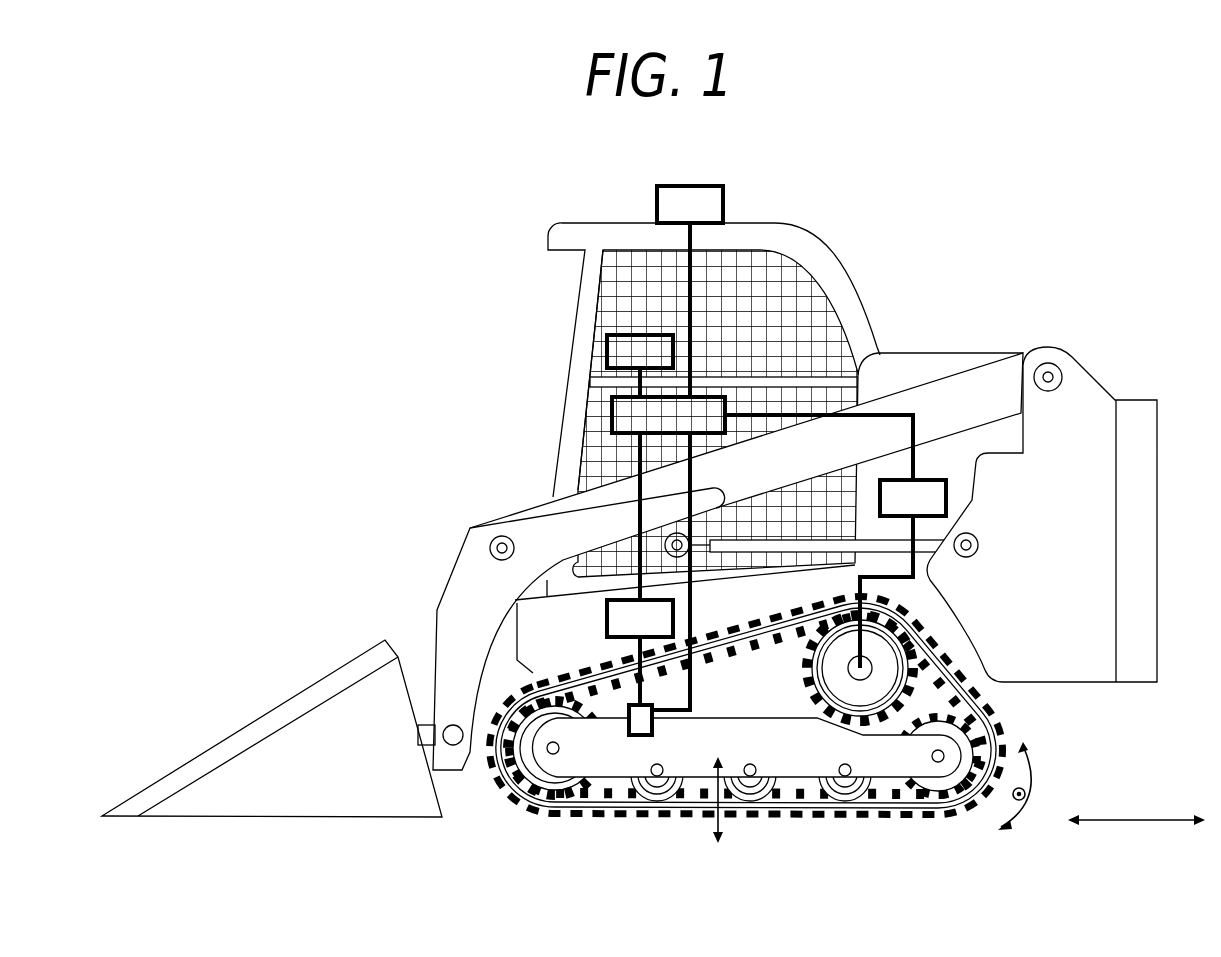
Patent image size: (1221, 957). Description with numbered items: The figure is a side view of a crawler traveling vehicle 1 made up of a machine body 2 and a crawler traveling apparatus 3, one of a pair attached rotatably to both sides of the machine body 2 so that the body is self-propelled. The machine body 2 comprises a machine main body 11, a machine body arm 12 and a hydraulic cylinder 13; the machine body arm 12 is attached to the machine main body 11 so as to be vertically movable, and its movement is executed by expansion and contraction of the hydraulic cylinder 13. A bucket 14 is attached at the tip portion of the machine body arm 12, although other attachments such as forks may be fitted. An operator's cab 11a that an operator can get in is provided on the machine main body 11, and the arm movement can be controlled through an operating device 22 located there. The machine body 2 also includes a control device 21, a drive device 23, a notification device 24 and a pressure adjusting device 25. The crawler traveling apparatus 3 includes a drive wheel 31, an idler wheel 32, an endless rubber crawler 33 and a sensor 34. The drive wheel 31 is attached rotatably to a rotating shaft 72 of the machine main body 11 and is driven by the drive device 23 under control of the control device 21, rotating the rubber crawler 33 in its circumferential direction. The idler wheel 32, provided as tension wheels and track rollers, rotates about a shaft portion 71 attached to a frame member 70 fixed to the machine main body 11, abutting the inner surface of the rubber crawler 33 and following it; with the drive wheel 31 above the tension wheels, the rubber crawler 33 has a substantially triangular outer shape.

The crawler traveling vehicle 1 is at (292, 321).
The machine body 2 is at (1097, 361).
The crawler traveling apparatus 3 is at (1008, 708).
The machine main body 11 is at (1080, 523).
The operator's cab 11a is at (767, 314).
The machine body arm 12 is at (936, 405).
The hydraulic cylinder 13 is at (757, 553).
The bucket 14 is at (280, 745).
The control device 21 is at (668, 415).
The operating device 22 is at (640, 351).
The drive device 23 is at (913, 498).
The notification device 24 is at (690, 204).
The pressure adjusting device 25 is at (640, 618).
The drive wheel 31 is at (837, 668).
The idler wheel 32 is at (547, 785).
The rubber crawler 33 is at (593, 808).
The sensor 34 is at (641, 735).
The frame member 70 is at (723, 720).
The shaft portion 71 is at (559, 748).
The rotating shaft 72 is at (850, 674).